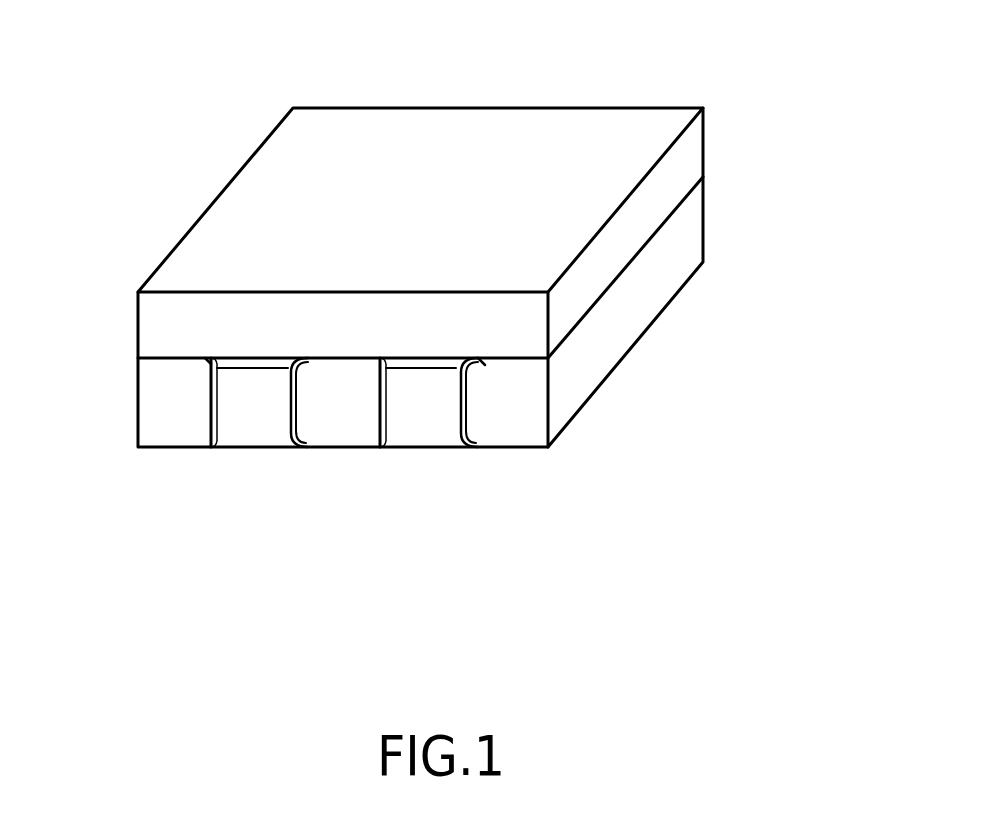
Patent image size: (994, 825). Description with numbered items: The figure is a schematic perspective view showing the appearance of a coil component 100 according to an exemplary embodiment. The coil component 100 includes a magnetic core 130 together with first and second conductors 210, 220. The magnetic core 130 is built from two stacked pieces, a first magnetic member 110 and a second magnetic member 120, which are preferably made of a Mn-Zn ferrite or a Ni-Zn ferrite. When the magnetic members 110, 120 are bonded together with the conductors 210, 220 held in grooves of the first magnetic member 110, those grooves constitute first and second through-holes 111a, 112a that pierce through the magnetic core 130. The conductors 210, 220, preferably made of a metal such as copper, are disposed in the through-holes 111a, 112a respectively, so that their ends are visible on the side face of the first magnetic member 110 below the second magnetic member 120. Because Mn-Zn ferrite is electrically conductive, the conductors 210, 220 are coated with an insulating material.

The coil component 100 is at (638, 48).
The first magnetic member 110 is at (688, 243).
The second magnetic member 120 is at (688, 154).
The magnetic core 130 is at (807, 112).
The first through-hole 111a is at (204, 374).
The second through-hole 112a is at (487, 378).
The first conductor 210 is at (256, 437).
The second conductor 220 is at (427, 437).